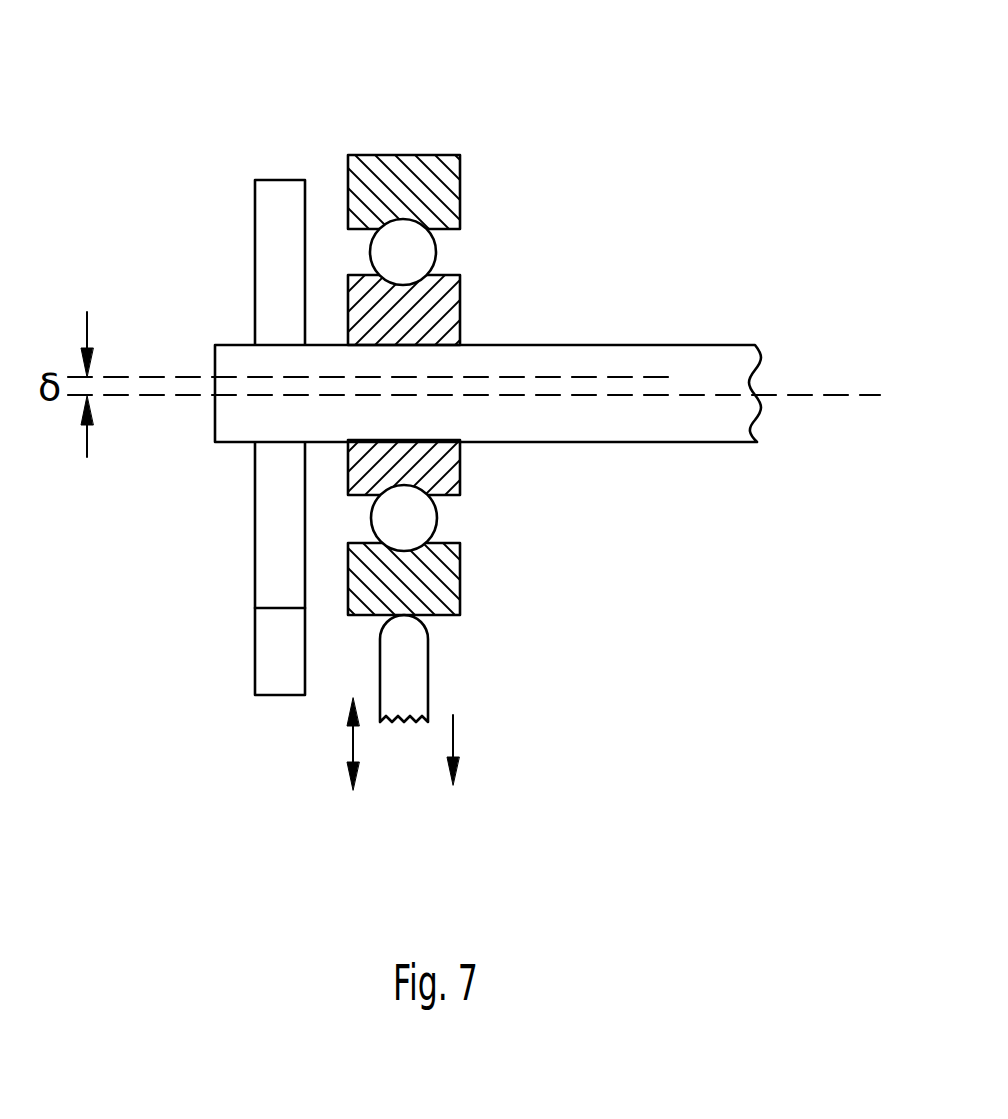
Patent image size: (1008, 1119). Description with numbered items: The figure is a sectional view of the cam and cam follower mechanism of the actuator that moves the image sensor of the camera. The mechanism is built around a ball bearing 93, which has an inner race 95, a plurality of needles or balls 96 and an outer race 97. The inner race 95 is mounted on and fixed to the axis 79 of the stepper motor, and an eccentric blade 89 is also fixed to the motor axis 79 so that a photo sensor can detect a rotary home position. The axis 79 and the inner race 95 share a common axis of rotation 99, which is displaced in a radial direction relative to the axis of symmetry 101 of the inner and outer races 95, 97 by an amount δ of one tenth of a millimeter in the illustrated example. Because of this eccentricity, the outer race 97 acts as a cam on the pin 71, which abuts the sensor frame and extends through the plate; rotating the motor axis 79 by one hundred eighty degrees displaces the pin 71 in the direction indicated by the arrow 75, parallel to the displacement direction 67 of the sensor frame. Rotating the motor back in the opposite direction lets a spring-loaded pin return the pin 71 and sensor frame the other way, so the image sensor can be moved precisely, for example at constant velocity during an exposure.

The displacement direction 67 is at (345, 742).
The pin 71 is at (429, 677).
The arrow 75 is at (454, 740).
The axis 79 is at (670, 442).
The eccentric blade 89 is at (255, 652).
The ball bearing 93 is at (455, 108).
The inner race 95 is at (447, 497).
The balls 96 is at (437, 256).
The outer race 97 is at (447, 543).
The axis of rotation 99 is at (827, 397).
The axis of symmetry 101 is at (153, 372).